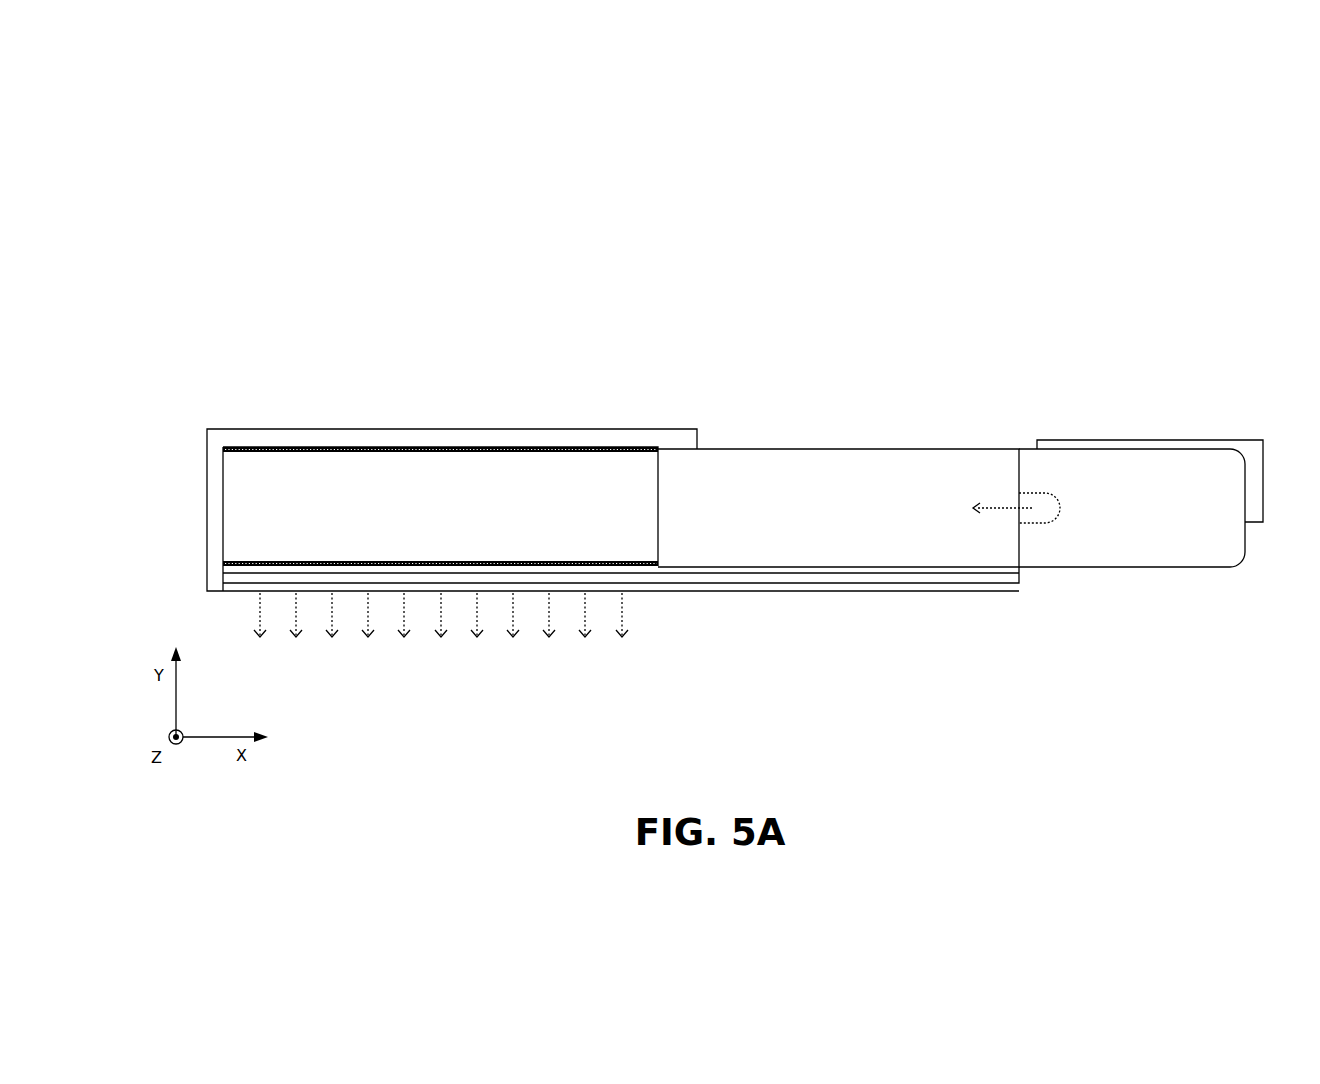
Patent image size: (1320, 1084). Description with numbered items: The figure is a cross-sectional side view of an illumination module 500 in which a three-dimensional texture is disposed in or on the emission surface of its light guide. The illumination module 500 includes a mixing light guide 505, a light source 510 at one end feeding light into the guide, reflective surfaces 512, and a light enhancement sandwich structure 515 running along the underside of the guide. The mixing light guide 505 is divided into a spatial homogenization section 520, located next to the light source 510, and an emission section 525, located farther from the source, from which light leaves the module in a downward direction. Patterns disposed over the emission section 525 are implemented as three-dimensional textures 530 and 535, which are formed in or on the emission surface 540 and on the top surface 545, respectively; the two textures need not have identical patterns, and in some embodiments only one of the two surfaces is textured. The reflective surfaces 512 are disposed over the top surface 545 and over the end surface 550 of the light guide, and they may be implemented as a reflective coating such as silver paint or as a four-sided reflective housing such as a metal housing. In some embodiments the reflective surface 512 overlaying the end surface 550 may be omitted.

The illumination module 500 is at (1158, 193).
The mixing light guide 505 is at (1019, 357).
The light source 510 is at (1265, 357).
The reflective surfaces 512 is at (335, 428).
The light enhancement sandwich structure 515 is at (1030, 603).
The spatial homogenization section 520 is at (845, 508).
The emission section 525 is at (440, 506).
The three-dimensional texture 530 is at (643, 567).
The three-dimensional texture 535 is at (593, 447).
The emission surface 540 is at (627, 578).
The top surface 545 is at (534, 437).
The end surface 550 is at (218, 519).